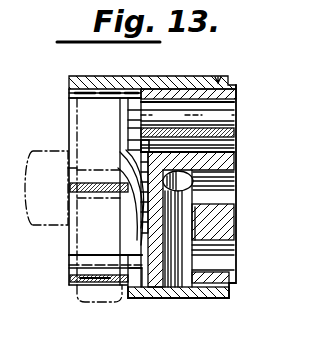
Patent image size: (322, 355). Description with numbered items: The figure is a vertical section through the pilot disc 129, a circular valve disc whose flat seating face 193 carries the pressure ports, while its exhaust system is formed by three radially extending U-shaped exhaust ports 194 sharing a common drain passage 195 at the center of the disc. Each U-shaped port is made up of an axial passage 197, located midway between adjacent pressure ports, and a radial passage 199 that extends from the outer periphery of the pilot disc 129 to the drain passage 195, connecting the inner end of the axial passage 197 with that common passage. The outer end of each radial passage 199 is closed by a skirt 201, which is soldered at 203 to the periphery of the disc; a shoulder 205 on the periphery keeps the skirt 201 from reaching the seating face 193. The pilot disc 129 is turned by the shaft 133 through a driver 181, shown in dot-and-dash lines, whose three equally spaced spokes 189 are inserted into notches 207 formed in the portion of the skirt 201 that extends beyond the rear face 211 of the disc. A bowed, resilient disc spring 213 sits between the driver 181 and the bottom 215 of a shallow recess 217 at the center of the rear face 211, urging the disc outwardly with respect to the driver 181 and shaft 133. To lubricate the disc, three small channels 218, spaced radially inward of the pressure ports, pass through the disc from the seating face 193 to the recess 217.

The pilot disc 129 is at (245, 80).
The shaft 133 is at (50, 167).
The driver 181 is at (88, 107).
The spokes 189 is at (80, 305).
The seating face 193 is at (238, 160).
The U-shaped exhaust ports 194 is at (184, 218).
The drain passage 195 is at (229, 194).
The axial passages 197 is at (229, 258).
The radial passages 199 is at (177, 296).
The skirt 201 is at (171, 73).
The solder joint 203 is at (141, 97).
The shoulder 205 is at (218, 76).
The notches 207 is at (122, 97).
The rear face 211 is at (142, 251).
The disc spring 213 is at (120, 158).
The bottom of recess 215 is at (155, 160).
The recess 217 is at (135, 228).
The channels 218 is at (197, 150).